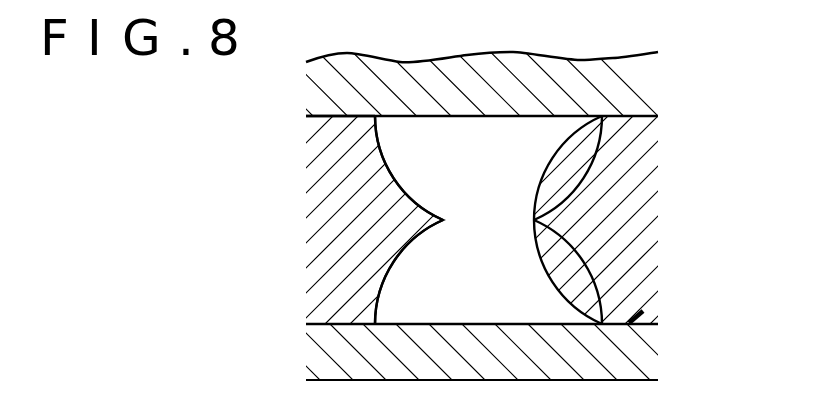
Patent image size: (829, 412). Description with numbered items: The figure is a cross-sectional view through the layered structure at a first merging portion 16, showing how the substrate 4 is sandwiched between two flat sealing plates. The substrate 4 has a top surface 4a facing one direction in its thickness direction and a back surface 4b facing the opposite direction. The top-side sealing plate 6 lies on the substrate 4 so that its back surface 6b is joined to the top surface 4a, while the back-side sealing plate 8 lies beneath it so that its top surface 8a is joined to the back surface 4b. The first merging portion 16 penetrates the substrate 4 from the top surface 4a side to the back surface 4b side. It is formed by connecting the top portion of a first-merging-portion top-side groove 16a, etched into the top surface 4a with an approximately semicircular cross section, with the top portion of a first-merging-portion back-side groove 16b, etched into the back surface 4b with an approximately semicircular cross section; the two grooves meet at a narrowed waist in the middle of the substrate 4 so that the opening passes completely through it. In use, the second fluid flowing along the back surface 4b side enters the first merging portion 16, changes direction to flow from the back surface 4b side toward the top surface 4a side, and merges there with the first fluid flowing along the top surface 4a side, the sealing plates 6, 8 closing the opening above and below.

The substrate 4 is at (645, 206).
The top surface 4a is at (362, 116).
The back surface 4b is at (361, 325).
The top-side sealing plate 6 is at (648, 82).
The back surface 6b is at (633, 117).
The back-side sealing plate 8 is at (648, 355).
The top surface 8a is at (642, 313).
The first merging portion 16 is at (516, 239).
The first-merging-portion top-side groove 16a is at (556, 214).
The first-merging-portion back-side groove 16b is at (583, 265).